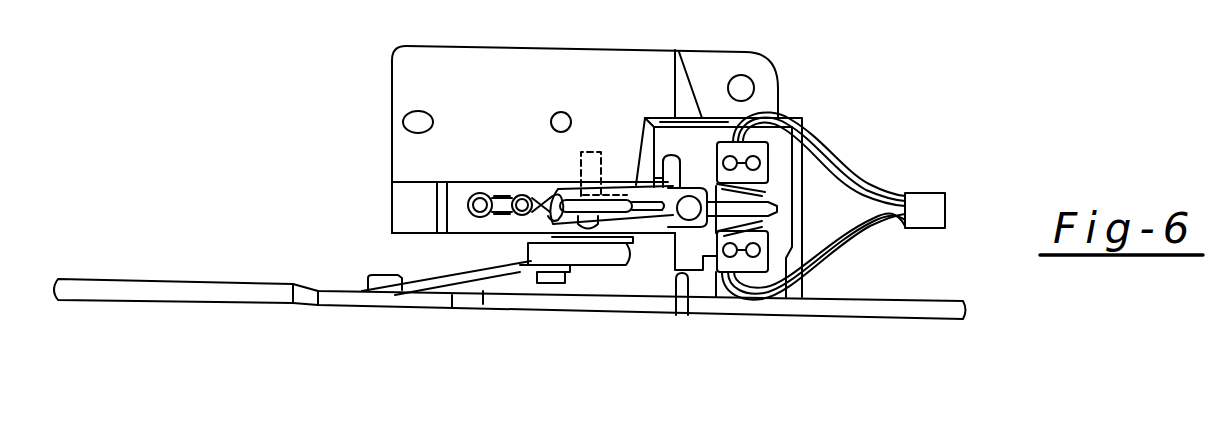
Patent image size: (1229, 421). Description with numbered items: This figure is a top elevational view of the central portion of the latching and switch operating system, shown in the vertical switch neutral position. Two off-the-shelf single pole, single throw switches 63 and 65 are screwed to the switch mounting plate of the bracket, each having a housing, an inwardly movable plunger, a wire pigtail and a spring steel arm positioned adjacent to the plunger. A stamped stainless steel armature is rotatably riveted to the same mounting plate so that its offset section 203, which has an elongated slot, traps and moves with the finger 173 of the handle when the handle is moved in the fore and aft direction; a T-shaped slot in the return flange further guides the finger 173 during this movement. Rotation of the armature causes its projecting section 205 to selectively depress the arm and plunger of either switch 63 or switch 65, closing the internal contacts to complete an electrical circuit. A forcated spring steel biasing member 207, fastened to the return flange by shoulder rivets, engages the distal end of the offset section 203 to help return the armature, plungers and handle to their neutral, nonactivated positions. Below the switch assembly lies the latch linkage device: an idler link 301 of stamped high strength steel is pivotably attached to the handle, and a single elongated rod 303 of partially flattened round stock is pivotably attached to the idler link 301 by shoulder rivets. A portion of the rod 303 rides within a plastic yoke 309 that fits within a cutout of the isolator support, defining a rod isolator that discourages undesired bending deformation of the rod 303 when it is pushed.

The switch 63 is at (768, 149).
The switch 65 is at (722, 273).
The finger 173 is at (588, 204).
The offset section 203 is at (555, 195).
The projecting section 205 is at (777, 208).
The biasing member 207 is at (503, 198).
The idler link 301 is at (472, 276).
The rod 303 is at (116, 287).
The yoke 309 is at (680, 310).